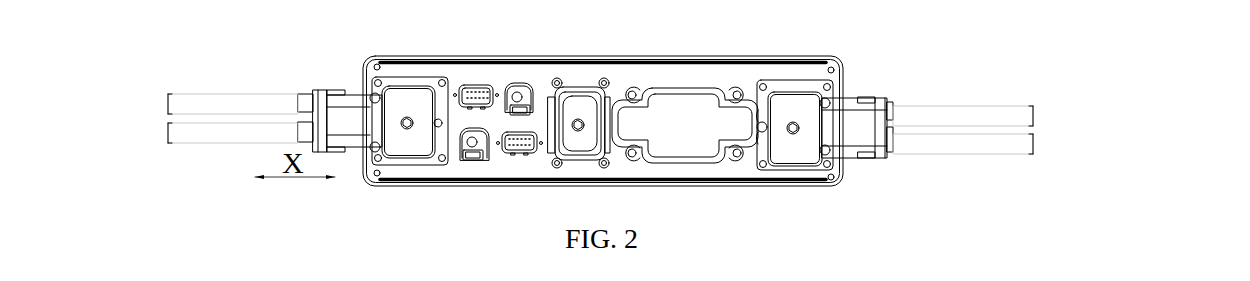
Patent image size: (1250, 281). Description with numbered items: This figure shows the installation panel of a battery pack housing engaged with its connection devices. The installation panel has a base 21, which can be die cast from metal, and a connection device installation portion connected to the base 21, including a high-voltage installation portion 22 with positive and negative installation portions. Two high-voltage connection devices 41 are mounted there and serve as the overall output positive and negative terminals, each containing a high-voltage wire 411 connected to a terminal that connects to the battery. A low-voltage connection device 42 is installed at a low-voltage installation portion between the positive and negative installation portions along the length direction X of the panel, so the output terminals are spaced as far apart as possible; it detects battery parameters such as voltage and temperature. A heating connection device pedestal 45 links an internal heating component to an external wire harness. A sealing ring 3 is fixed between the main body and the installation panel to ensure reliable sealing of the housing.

The sealing ring 3 is at (388, 64).
The base 21 is at (684, 82).
The high-voltage installation portion 22 is at (759, 109).
The high-voltage connection device 41 is at (861, 128).
The high-voltage wire 411 is at (265, 108).
The low-voltage connection device 42 is at (477, 86).
The heating connection device pedestal 45 is at (522, 90).